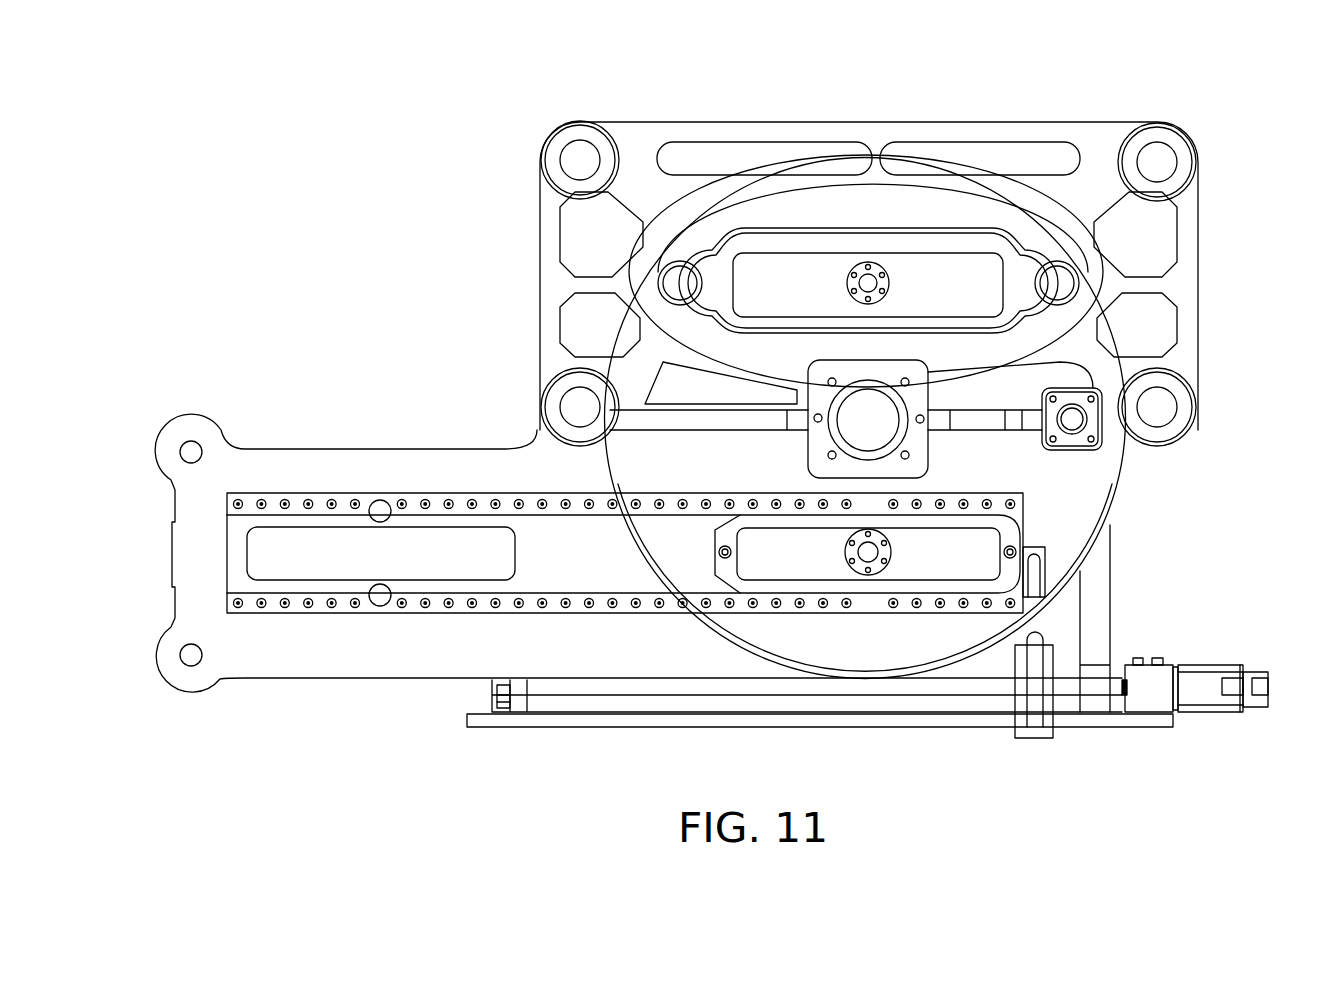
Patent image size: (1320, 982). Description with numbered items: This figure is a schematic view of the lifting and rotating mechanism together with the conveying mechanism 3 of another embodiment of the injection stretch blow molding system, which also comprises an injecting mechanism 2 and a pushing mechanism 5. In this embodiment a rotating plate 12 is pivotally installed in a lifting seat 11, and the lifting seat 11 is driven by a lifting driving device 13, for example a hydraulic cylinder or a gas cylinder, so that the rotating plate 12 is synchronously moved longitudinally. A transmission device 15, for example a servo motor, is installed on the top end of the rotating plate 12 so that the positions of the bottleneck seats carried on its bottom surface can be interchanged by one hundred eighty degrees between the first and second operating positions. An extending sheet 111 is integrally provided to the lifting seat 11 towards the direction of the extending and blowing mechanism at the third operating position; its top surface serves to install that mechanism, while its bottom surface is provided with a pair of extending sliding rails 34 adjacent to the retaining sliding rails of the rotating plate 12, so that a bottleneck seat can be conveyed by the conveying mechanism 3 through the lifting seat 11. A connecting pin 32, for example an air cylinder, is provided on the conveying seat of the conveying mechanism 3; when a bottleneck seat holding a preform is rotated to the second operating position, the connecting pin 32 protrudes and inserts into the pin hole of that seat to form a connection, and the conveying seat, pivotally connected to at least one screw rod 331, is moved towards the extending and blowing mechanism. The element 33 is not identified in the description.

The injecting mechanism 2 is at (840, 288).
The conveying mechanism 3 is at (1185, 640).
The pushing mechanism 5 is at (830, 551).
The lifting seat 11 is at (1082, 530).
The rotating plate 12 is at (1113, 505).
The lifting driving device 13 is at (870, 262).
The transmission device 15 is at (862, 405).
The connecting pin 32 is at (1035, 663).
The motor 33 is at (1195, 678).
The extending sliding rails 34 is at (297, 500).
The extending sheet 111 is at (372, 467).
The screw rod 331 is at (968, 688).